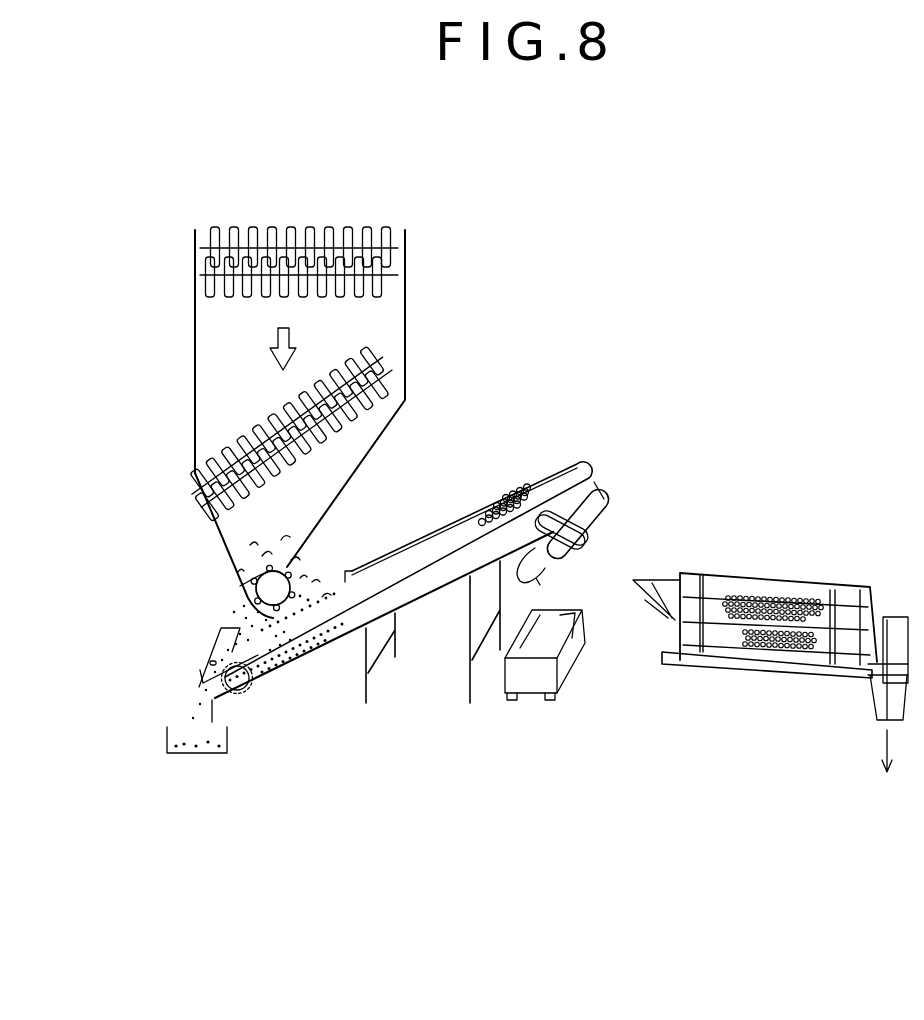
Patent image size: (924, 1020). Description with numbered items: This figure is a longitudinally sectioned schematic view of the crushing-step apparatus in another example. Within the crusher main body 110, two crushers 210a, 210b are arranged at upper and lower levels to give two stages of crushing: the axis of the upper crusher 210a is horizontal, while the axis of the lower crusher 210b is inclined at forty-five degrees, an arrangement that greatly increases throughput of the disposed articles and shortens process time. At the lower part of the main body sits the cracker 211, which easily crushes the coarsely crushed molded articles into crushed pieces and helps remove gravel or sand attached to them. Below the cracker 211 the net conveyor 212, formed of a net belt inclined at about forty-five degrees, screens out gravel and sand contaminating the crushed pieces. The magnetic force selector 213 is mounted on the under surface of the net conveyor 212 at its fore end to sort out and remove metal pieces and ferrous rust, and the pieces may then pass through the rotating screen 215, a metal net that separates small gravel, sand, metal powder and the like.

The hopper 110 is at (405, 353).
The crusher 210a is at (303, 224).
The crusher 210b is at (362, 413).
The cracker 211 is at (276, 591).
The net conveyor 212 is at (447, 537).
The magnetic force selector 213 is at (600, 506).
The rotating screen 215 is at (793, 607).